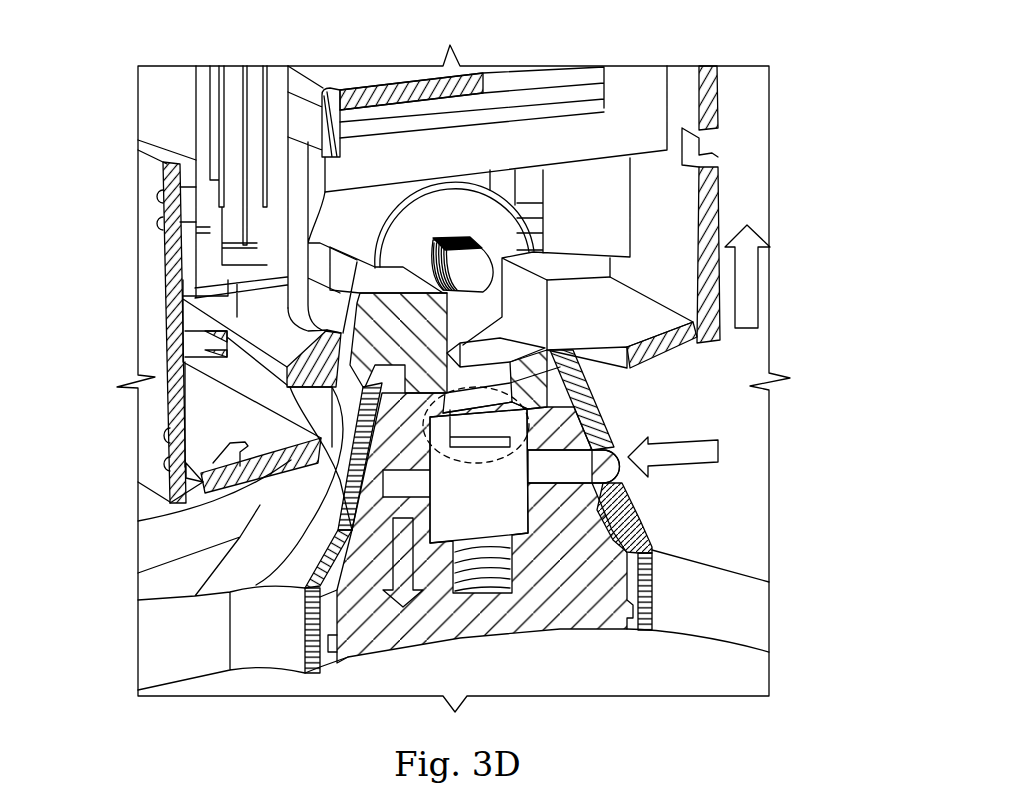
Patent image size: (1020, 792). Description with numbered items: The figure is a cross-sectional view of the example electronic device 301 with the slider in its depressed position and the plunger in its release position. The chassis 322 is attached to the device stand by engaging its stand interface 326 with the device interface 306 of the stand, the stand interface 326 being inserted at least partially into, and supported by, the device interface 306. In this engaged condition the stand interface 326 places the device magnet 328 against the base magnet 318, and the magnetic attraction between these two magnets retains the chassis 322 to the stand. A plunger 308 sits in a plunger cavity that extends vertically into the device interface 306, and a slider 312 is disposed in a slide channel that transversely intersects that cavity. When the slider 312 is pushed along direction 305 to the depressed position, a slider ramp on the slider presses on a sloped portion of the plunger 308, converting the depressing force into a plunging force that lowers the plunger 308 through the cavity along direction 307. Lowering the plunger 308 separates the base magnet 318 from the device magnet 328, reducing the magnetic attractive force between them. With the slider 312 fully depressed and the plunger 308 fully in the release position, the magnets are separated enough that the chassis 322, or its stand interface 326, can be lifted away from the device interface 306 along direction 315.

The electronic device 301 is at (793, 158).
The direction 305 is at (675, 457).
The device interface 306 is at (335, 503).
The direction 307 is at (407, 573).
The plunger 308 is at (500, 512).
The slider 312 is at (604, 468).
The direction 315 is at (748, 297).
The base magnet 318 is at (528, 414).
The chassis 322 is at (150, 297).
The stand interface 326 is at (590, 288).
The device magnet 328 is at (547, 350).